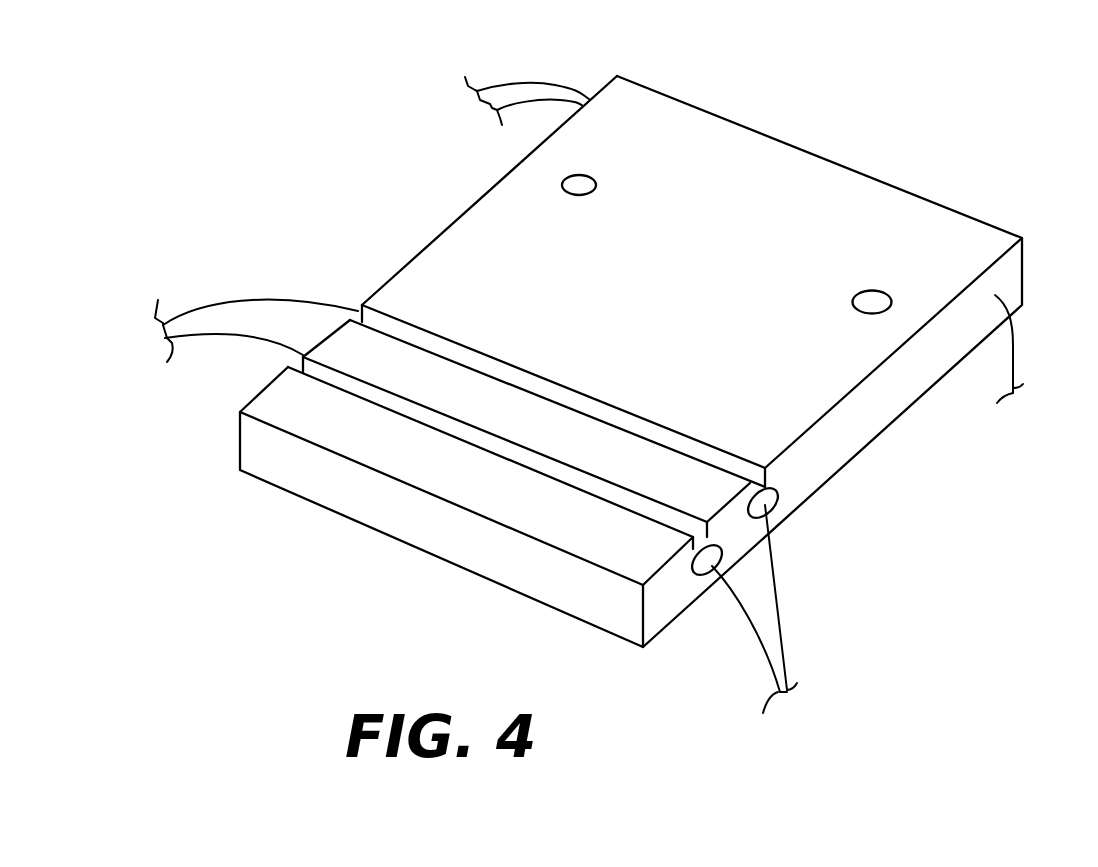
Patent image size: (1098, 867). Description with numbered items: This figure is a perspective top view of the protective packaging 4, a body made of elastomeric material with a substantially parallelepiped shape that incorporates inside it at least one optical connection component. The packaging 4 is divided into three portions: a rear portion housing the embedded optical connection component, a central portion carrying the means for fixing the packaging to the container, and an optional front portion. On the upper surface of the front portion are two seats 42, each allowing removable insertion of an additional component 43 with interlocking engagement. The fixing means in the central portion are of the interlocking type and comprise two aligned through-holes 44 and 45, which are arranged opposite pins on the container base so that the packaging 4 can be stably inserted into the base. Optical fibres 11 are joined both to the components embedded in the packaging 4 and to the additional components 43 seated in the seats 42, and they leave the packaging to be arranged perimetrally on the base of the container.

The packaging 4 is at (280, 496).
The fibres 11 is at (531, 100).
The seats 42 is at (560, 467).
The additional component 43 is at (777, 500).
The through-hole 44 is at (596, 186).
The through-hole 45 is at (863, 291).